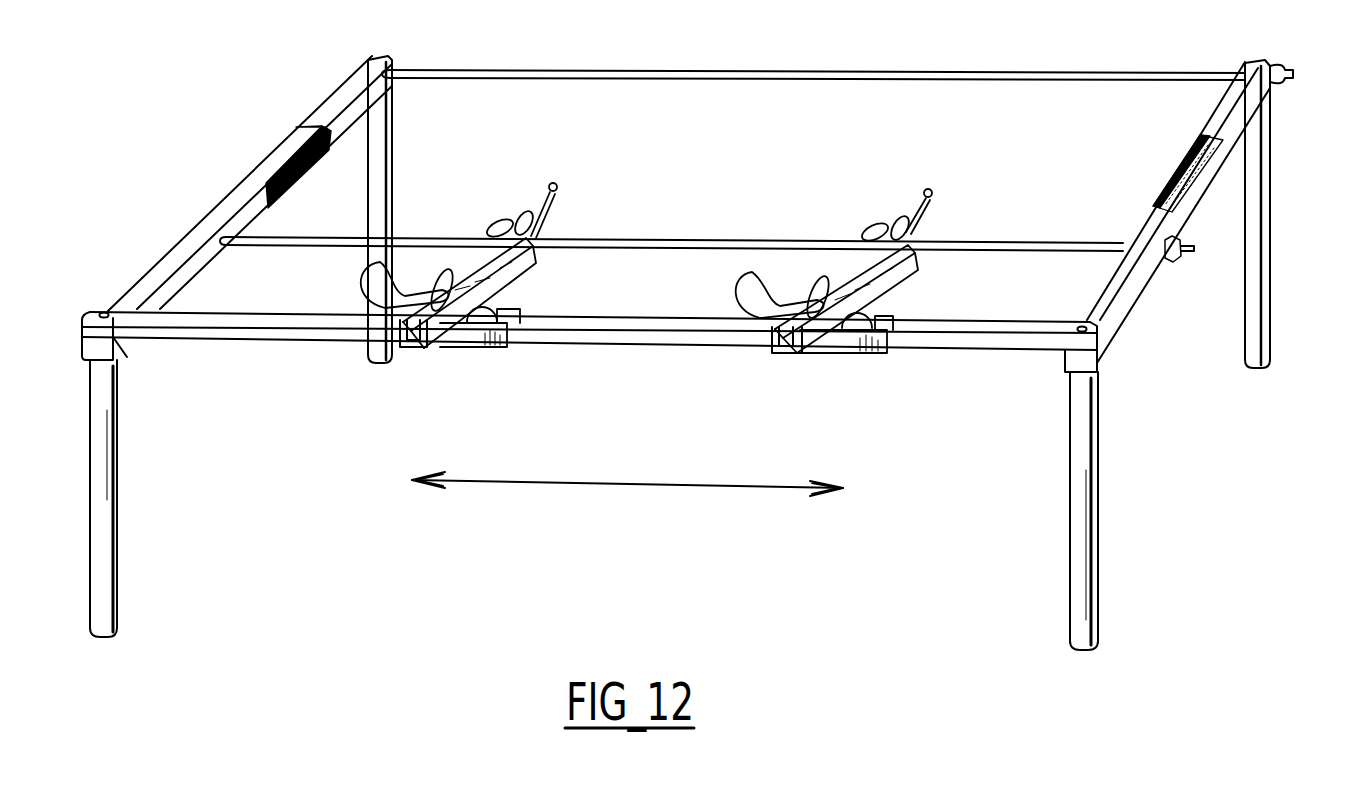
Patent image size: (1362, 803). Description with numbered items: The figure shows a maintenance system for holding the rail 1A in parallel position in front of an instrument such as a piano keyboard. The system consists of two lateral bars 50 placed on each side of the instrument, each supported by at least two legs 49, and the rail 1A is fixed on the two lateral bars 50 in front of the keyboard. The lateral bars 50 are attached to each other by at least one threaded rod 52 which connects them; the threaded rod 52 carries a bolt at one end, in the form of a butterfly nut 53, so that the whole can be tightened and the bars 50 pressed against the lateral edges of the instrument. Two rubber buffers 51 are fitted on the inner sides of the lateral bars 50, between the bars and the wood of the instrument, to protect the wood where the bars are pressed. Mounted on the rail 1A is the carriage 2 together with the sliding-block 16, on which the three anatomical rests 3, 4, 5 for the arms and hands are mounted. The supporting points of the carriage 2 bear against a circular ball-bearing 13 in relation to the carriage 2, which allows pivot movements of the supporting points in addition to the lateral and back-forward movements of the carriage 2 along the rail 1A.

The rail 1A is at (650, 338).
The carriage 2 is at (470, 345).
The anatomical rest 3 is at (363, 287).
The anatomical rest 4 is at (489, 222).
The anatomical rest 5 is at (557, 184).
The circular ball-bearing 13 is at (750, 270).
The sliding-block 16 is at (413, 352).
The leg 49 is at (107, 537).
The lateral bar 50 is at (252, 187).
The rubber buffer 51 is at (330, 178).
The threaded rod 52 is at (630, 238).
The butterfly nut 53 is at (1176, 266).